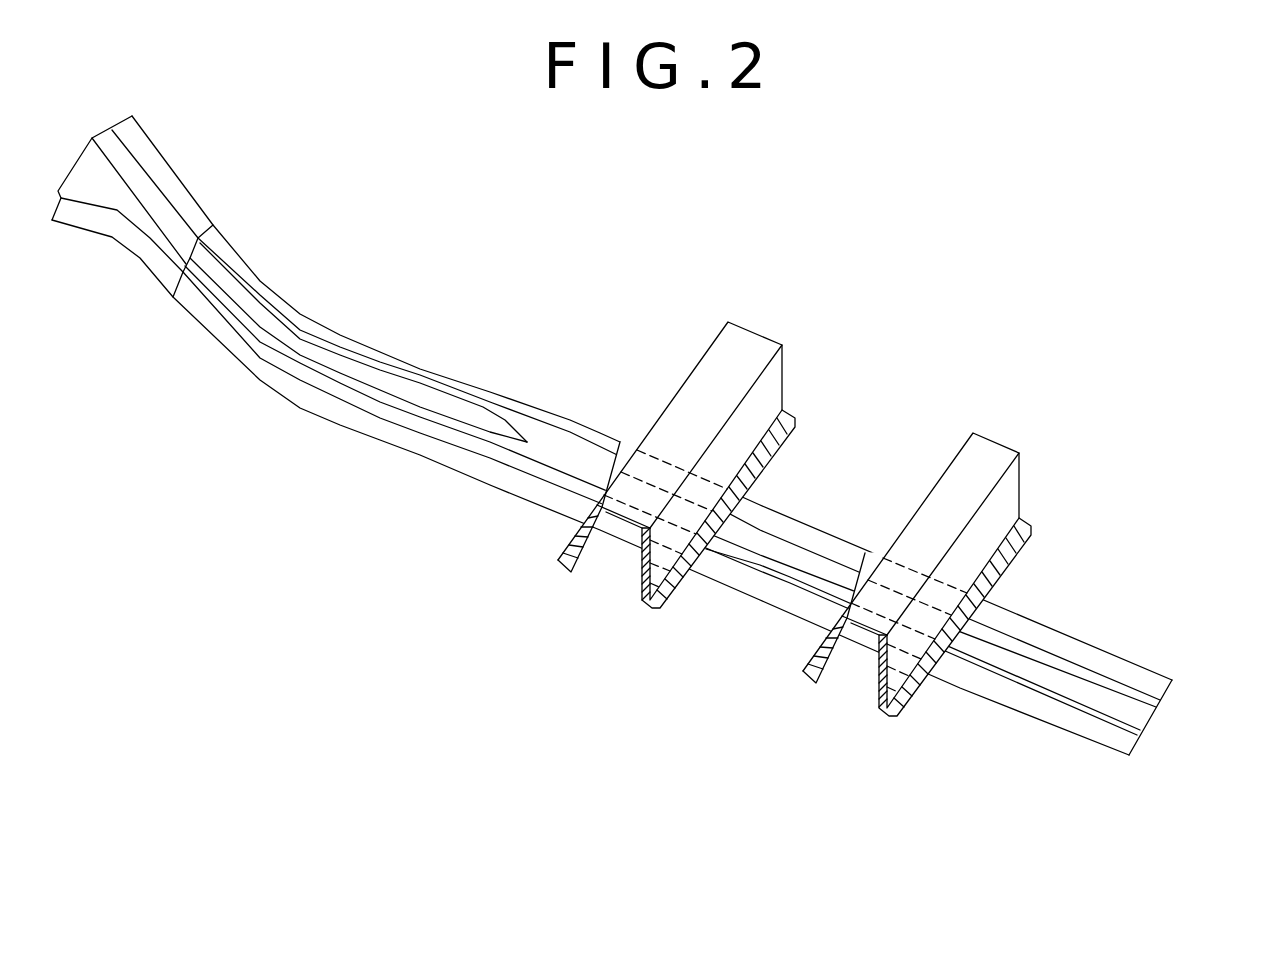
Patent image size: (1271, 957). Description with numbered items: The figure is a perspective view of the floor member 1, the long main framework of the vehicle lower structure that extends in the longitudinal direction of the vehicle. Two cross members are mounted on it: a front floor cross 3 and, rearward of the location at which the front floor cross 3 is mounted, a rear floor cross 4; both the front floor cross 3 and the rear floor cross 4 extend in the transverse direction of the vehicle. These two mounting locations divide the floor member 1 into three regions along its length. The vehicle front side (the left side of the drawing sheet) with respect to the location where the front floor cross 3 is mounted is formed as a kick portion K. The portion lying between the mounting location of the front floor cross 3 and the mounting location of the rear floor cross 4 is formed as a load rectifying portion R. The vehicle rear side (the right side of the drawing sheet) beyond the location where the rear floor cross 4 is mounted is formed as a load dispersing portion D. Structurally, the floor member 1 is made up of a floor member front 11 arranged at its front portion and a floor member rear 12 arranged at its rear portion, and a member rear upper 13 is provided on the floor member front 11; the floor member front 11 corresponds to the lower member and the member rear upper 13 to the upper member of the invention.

The floor member 1 is at (658, 480).
The front floor cross 3 is at (688, 587).
The rear floor cross 4 is at (937, 690).
The floor member front 11 is at (287, 390).
The floor member rear 12 is at (1080, 723).
The member rear upper 13 is at (312, 320).
The kick portion K is at (315, 428).
The load rectifying portion R is at (823, 528).
The load dispersing portion D is at (1147, 660).